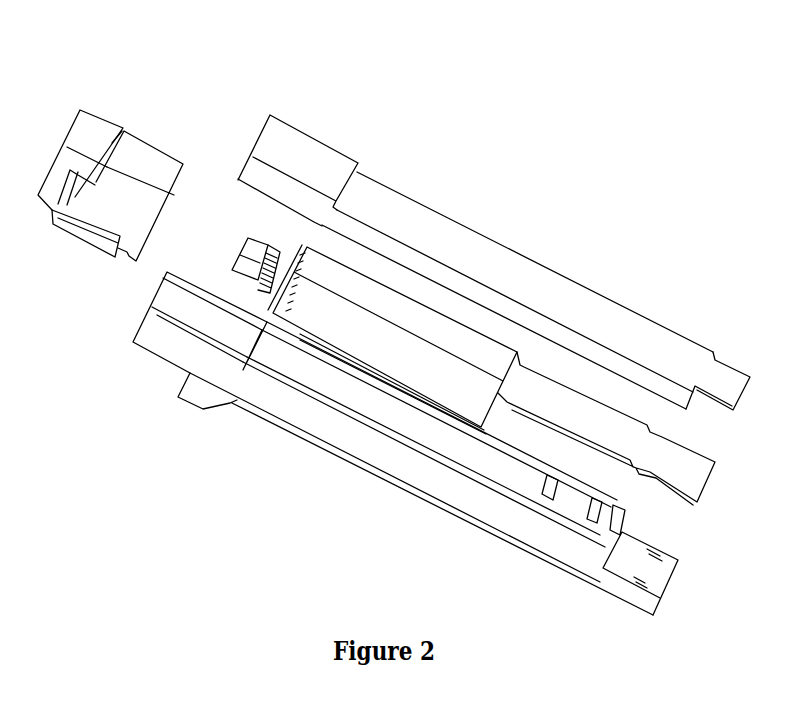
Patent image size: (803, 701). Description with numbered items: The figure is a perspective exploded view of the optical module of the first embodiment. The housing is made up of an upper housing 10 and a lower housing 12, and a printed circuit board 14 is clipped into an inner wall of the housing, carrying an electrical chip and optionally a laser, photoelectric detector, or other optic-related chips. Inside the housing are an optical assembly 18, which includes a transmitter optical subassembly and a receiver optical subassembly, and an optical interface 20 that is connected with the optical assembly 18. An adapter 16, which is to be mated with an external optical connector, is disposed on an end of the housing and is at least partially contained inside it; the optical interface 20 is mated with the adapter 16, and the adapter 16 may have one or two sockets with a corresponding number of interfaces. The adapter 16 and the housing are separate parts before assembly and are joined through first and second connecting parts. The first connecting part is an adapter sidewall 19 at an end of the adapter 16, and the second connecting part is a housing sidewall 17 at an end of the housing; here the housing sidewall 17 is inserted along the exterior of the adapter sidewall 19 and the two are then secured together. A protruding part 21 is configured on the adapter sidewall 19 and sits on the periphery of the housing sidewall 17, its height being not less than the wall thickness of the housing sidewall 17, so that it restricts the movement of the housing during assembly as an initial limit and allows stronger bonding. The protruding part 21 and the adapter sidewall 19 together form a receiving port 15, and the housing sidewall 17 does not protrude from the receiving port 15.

The upper housing 10 is at (270, 425).
The lower housing 12 is at (583, 310).
The printed circuit board 14 is at (607, 427).
The receiving port 15 is at (117, 139).
The adapter 16 is at (80, 107).
The housing sidewall 17 is at (160, 337).
The optical assembly 18 is at (425, 305).
The adapter sidewall 19 is at (137, 203).
The optical interface 20 is at (262, 252).
The protruding part 21 is at (82, 230).